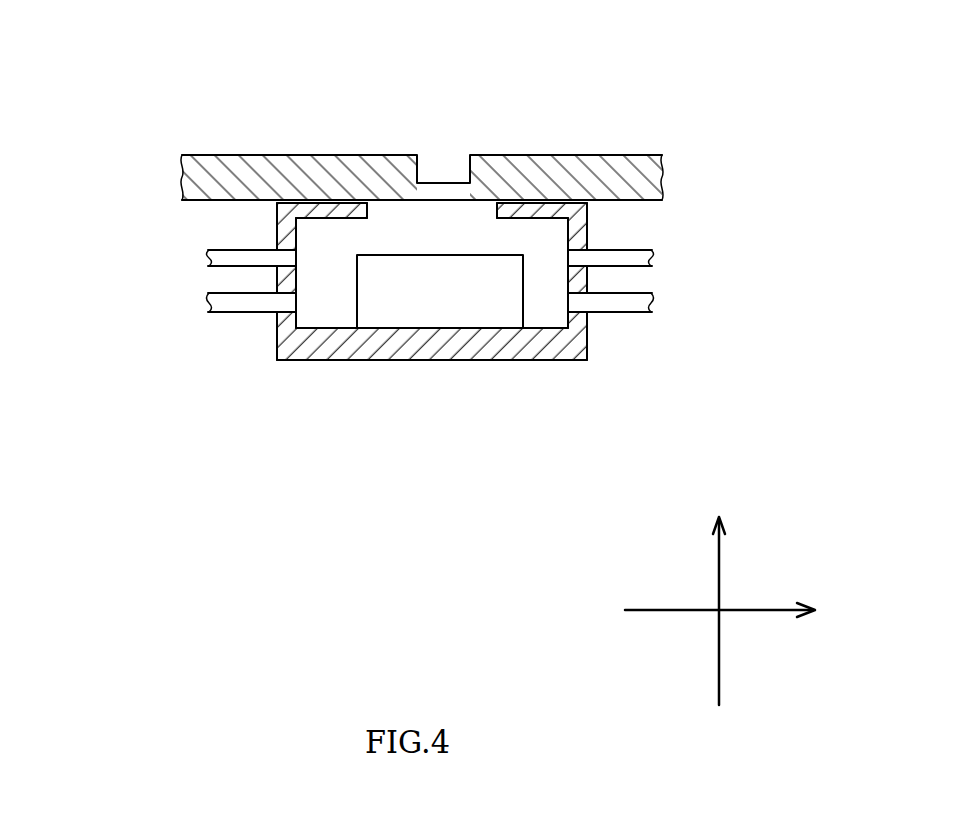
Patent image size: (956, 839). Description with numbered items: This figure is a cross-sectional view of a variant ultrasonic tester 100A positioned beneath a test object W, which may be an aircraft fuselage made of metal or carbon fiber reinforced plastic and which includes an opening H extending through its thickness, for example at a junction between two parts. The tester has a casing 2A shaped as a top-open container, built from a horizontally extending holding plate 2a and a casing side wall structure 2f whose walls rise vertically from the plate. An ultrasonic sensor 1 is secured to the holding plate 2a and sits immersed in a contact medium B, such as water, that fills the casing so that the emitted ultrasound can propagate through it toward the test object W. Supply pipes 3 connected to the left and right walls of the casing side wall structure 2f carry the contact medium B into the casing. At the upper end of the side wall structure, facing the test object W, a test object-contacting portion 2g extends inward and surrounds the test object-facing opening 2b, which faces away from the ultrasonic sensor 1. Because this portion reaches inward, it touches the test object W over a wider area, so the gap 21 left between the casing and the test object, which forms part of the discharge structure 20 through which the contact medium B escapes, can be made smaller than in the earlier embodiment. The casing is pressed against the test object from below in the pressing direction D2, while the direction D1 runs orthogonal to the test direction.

The ultrasonic tester 100A is at (399, 224).
The test object W is at (340, 153).
The opening H is at (420, 172).
The casing 2A is at (399, 254).
The test object-contacting portion 2g is at (298, 202).
The test object-facing opening 2b is at (440, 208).
The gap 21 is at (176, 281).
The discharge structure 20 is at (277, 204).
The casing side wall structure 2f is at (583, 275).
The holding plate 2a is at (575, 340).
The supply pipes 3 is at (238, 258).
The ultrasonic sensor 1 is at (497, 312).
The contact medium B is at (340, 300).
The direction D1 is at (662, 612).
The pressing direction D2 is at (720, 557).